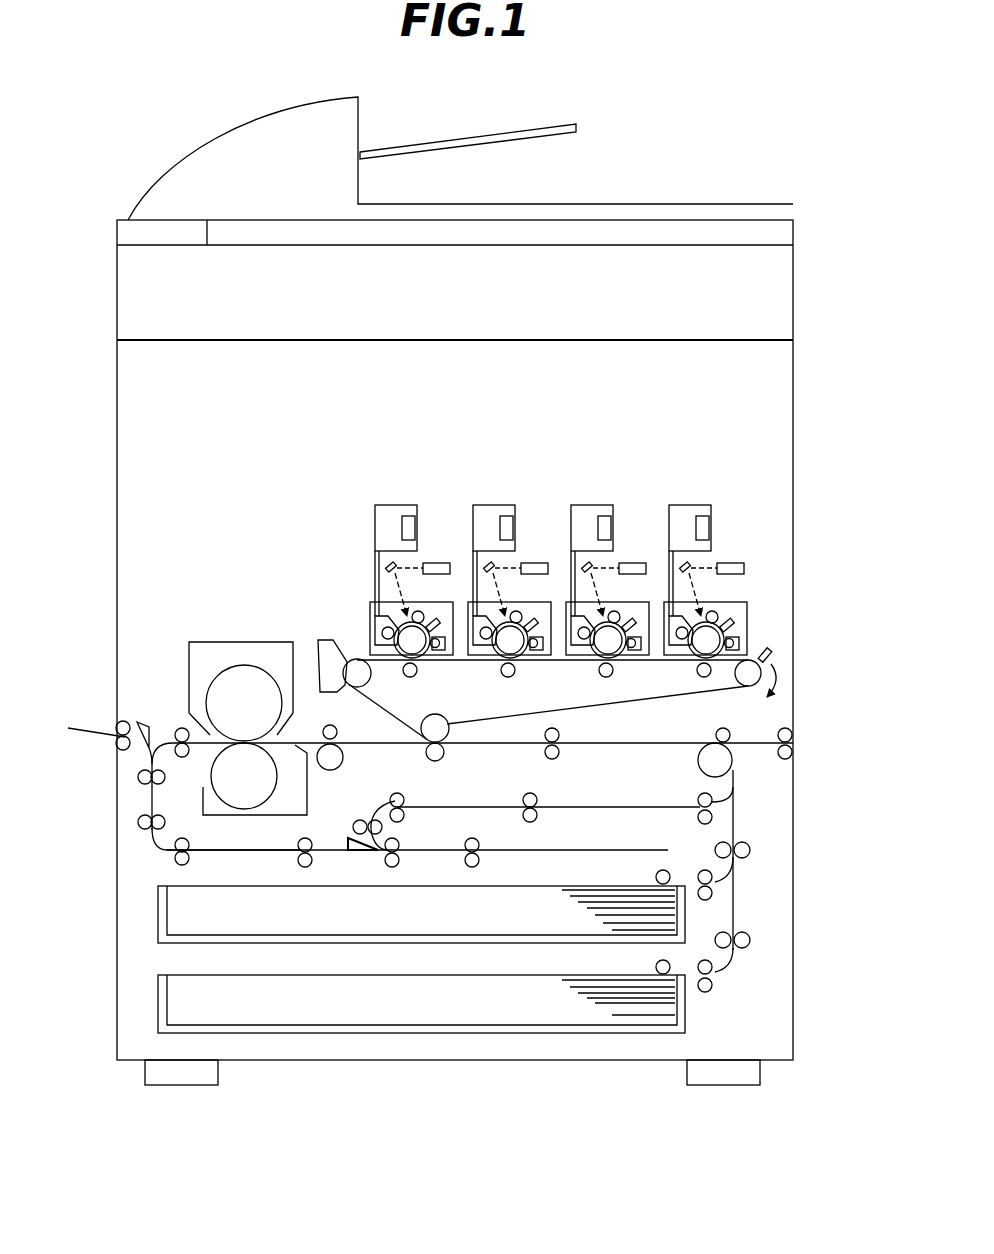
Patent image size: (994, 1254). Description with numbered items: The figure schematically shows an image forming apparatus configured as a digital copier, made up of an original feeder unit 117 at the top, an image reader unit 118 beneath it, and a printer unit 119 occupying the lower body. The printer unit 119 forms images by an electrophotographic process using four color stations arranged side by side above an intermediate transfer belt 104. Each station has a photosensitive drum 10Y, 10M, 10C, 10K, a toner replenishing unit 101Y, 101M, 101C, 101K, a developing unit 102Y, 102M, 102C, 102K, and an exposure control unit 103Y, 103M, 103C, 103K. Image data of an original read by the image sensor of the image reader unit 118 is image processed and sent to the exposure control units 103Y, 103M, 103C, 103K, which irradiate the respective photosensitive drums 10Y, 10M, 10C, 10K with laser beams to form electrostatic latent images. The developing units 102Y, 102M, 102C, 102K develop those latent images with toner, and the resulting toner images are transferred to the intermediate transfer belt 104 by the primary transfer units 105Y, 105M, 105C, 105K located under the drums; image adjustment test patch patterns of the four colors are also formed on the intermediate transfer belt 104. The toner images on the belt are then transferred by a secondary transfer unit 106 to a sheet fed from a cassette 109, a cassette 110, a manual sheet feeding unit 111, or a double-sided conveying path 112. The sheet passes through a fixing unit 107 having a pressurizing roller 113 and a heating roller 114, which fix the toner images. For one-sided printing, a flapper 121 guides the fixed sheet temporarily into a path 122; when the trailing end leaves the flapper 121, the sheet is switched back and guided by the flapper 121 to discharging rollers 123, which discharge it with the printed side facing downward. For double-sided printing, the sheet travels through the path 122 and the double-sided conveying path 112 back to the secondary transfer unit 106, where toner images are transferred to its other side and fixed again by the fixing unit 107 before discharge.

The photosensitive drum 10Y is at (407, 647).
The photosensitive drum 10M is at (505, 647).
The photosensitive drum 10C is at (610, 650).
The photosensitive drum 10K is at (718, 634).
The toner replenishing unit 101Y is at (382, 505).
The toner replenishing unit 101M is at (487, 505).
The toner replenishing unit 101C is at (588, 505).
The toner replenishing unit 101K is at (690, 505).
The developing unit 102Y is at (373, 623).
The developing unit 102M is at (478, 628).
The developing unit 102C is at (576, 628).
The developing unit 102K is at (674, 628).
The exposure control unit 103Y is at (430, 563).
The exposure control unit 103M is at (528, 563).
The exposure control unit 103C is at (626, 563).
The exposure control unit 103K is at (735, 563).
The intermediate transfer belt 104 is at (730, 700).
The primary transfer unit 105Y is at (423, 667).
The primary transfer unit 105M is at (521, 667).
The primary transfer unit 105C is at (618, 668).
The primary transfer unit 105K is at (720, 668).
The secondary transfer unit 106 is at (420, 751).
The fixing unit 107 is at (227, 642).
The cassette 109 is at (158, 1005).
The cassette 110 is at (158, 915).
The manual sheet feeding unit 111 is at (797, 746).
The double-sided conveying path 112 is at (572, 808).
The pressurizing roller 113 is at (230, 684).
The heating roller 114 is at (222, 772).
The original feeder unit 117 is at (795, 213).
The image reader unit 118 is at (795, 292).
The printer unit 119 is at (795, 423).
The flapper 121 is at (148, 722).
The path 122 is at (220, 853).
The discharging rollers 123 is at (127, 752).